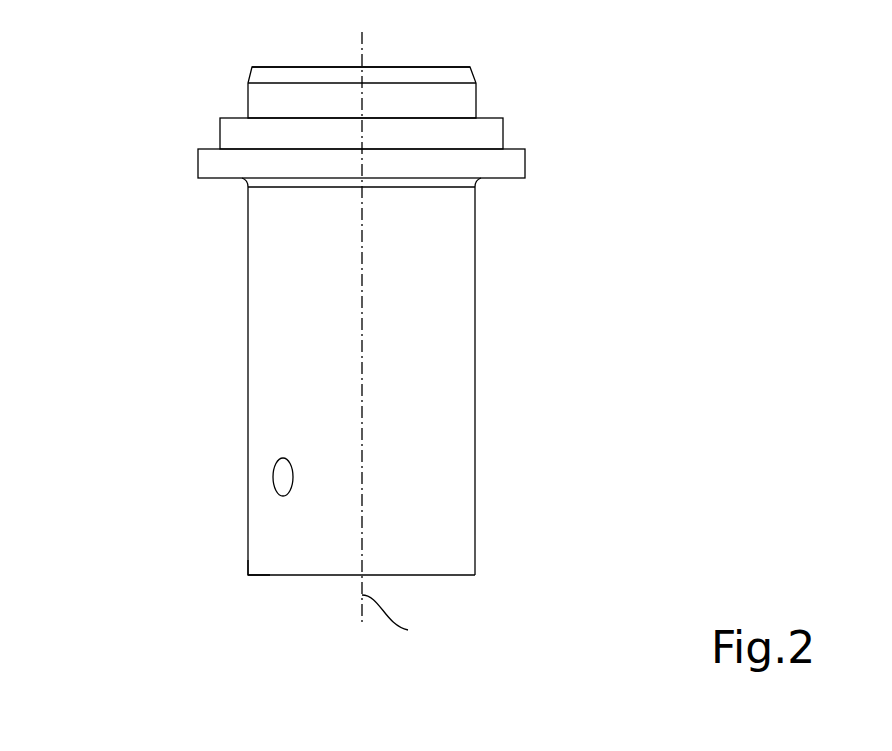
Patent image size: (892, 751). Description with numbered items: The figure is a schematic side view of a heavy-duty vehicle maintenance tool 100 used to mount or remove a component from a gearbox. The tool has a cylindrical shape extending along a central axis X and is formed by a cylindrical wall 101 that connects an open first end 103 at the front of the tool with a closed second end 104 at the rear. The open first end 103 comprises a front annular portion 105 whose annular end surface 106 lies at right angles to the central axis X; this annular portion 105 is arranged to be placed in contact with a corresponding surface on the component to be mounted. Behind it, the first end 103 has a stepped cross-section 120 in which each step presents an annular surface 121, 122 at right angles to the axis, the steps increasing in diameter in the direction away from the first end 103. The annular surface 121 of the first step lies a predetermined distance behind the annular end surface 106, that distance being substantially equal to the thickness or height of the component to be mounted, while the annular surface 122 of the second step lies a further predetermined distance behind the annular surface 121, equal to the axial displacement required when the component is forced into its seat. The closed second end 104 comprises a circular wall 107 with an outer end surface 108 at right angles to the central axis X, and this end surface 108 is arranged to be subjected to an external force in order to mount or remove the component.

The heavy-duty vehicle maintenance tool 100 is at (605, 250).
The cylindrical wall 101 is at (302, 362).
The open first end 103 is at (207, 45).
The closed second end 104 is at (195, 575).
The annular portion 105 is at (487, 78).
The annular end surface 106 is at (440, 67).
The circular wall 107 is at (268, 582).
The outer end surface 108 is at (330, 575).
The stepped cross-section 120 is at (562, 137).
The annular surface of first step 121 is at (235, 118).
The annular surface of second step 122 is at (215, 150).